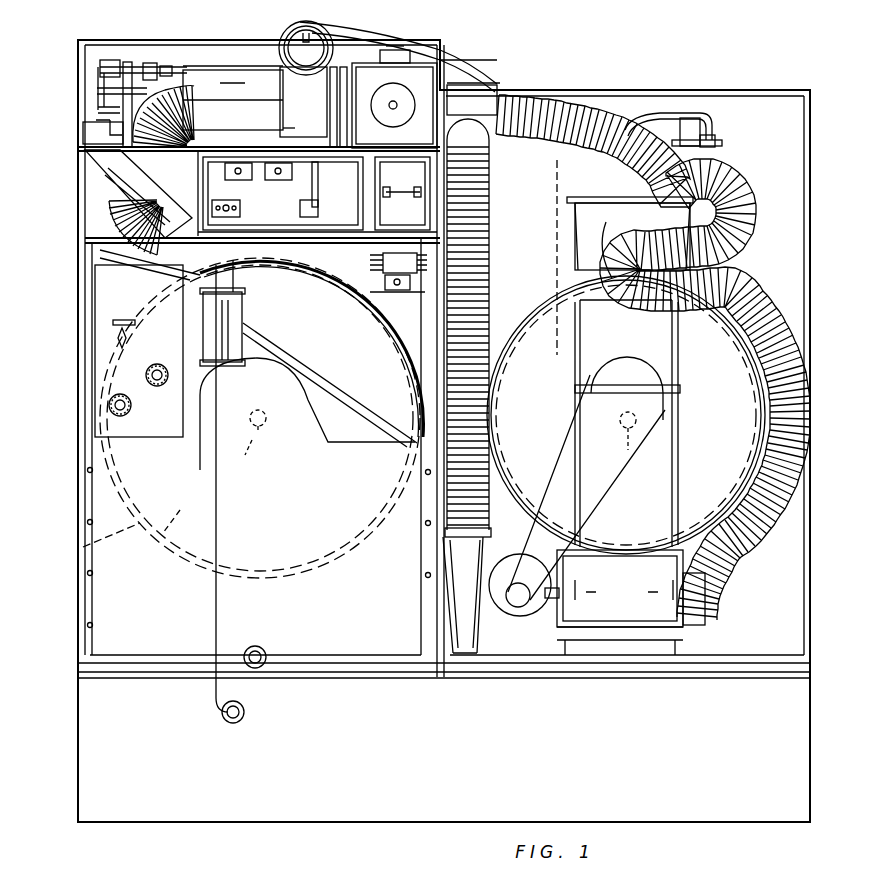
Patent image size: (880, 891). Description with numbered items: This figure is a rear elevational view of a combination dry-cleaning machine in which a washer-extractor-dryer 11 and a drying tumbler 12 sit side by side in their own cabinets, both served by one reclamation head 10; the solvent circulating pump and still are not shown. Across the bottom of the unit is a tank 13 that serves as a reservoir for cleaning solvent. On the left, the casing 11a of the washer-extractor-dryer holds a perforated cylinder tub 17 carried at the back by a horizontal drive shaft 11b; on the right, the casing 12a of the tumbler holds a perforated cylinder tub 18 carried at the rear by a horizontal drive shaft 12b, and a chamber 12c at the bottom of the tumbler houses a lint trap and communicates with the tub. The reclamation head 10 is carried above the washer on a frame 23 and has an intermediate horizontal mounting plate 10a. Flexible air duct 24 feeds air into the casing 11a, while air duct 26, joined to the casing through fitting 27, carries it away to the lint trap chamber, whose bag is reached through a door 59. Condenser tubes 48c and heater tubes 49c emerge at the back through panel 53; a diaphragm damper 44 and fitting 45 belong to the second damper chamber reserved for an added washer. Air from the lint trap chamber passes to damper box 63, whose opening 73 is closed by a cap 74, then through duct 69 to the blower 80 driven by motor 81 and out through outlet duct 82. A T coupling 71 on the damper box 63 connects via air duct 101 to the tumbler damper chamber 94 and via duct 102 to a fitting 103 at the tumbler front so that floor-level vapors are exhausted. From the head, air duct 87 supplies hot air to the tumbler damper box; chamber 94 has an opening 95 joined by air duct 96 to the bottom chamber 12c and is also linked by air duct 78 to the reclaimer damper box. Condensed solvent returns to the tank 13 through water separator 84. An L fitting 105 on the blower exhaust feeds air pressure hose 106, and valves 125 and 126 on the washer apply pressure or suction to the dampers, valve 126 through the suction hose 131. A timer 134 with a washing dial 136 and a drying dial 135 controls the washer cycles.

The reclamation head 10 is at (118, 160).
The intermediate horizontal mounting plate 10a is at (84, 140).
The washer-extractor-dryer 11 is at (150, 462).
The casing 11a is at (84, 547).
The horizontal drive shaft 11b is at (264, 441).
The drying tumbler 12 is at (705, 468).
The casing 12a is at (530, 322).
The horizontal drive shaft 12b is at (594, 450).
The chamber 12c is at (631, 602).
The tank 13 is at (172, 772).
The perforated cylinder tub 17 is at (171, 511).
The perforated cylinder tub 18 is at (504, 470).
The frame 23 is at (107, 243).
The air duct 24 is at (108, 256).
The air duct 26 is at (350, 300).
The fitting 27 is at (375, 335).
The diaphragm damper 44 is at (107, 198).
The fitting 45 is at (96, 118).
The inlet and outlet tubes 48c is at (318, 190).
The inlet and outlet tubes 49c is at (238, 212).
The panel 53 is at (290, 214).
The door 59 is at (414, 180).
The damper box 63 is at (423, 60).
The duct 69 is at (347, 83).
The T coupling 71 is at (492, 80).
The opening 73 is at (390, 110).
The cap 74 is at (405, 116).
The air duct 78 is at (489, 266).
The blower 80 is at (278, 72).
The motor 81 is at (205, 76).
The outlet duct 82 is at (303, 102).
The water separator 84 is at (245, 318).
The air duct 87 is at (168, 147).
The damper chamber 94 is at (680, 222).
The opening 95 is at (610, 226).
The air duct 96 is at (752, 298).
The air duct 101 is at (740, 212).
The duct 102 is at (489, 290).
The fitting 103 is at (480, 636).
The L fitting 105 is at (306, 48).
The air pressure hose 106 is at (242, 66).
The valve 125 is at (141, 90).
The valve 126 is at (98, 70).
The suction hose 131 is at (375, 36).
The timer 134 is at (103, 356).
The dial 135 is at (158, 390).
The dial 136 is at (108, 406).